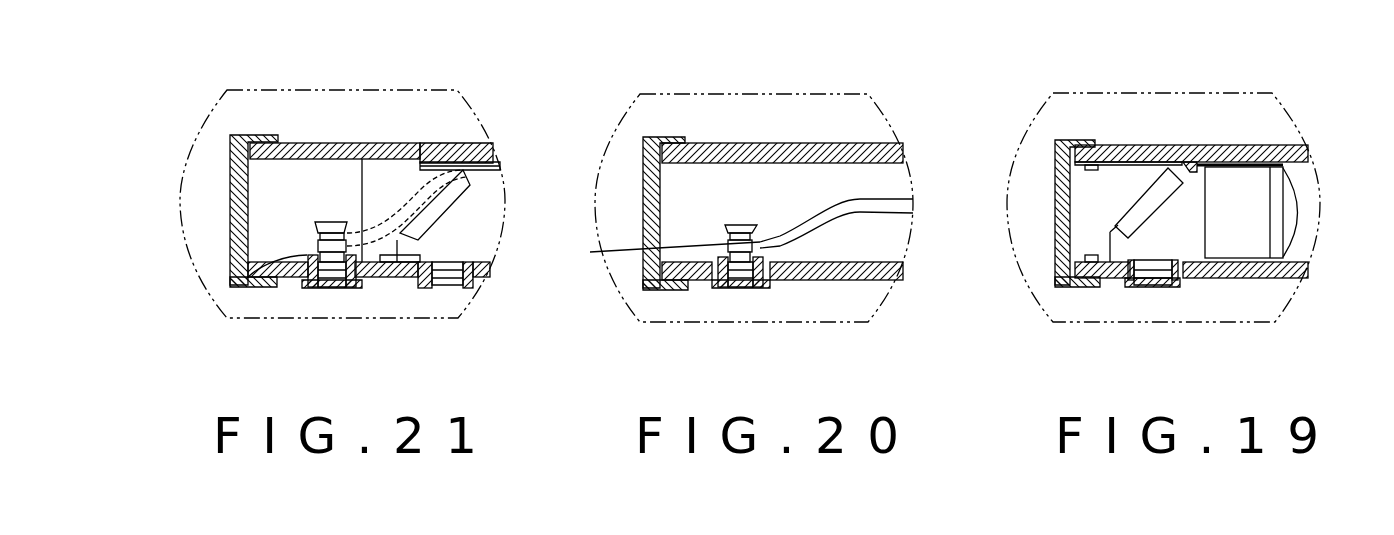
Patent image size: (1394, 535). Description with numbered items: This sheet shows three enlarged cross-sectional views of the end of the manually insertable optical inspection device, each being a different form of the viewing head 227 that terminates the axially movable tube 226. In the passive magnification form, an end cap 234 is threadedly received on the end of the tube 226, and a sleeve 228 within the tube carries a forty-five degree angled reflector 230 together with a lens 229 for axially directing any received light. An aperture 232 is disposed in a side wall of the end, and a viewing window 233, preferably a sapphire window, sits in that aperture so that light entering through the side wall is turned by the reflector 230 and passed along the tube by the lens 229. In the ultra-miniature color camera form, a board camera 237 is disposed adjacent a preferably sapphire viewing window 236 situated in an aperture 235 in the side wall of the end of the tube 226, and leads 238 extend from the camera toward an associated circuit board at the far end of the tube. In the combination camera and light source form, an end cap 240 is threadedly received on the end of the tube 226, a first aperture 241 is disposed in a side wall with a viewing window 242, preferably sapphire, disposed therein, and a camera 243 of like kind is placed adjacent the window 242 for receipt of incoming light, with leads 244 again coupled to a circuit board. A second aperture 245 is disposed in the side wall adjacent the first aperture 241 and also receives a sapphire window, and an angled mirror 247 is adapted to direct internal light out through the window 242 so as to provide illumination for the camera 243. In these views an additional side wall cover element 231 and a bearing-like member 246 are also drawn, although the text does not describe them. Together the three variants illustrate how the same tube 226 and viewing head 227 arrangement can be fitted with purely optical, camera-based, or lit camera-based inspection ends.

In FIG. 21, the axially movable tube 226 is at (371, 93).
In FIG. 20, the axially movable tube 226 is at (837, 143).
In FIG. 19, the axially movable tube 226 is at (1275, 143).
In FIG. 21, the viewing head 227 is at (378, 63).
In FIG. 20, the viewing head 227 is at (750, 75).
In FIG. 19, the viewing head 227 is at (1072, 75).
In FIG. 19, the sleeve 228 is at (1117, 147).
In FIG. 19, the lens 229 is at (1277, 202).
In FIG. 19, the reflector 230 is at (1158, 193).
In FIG. 19, the side wall cover 231 is at (1053, 160).
In FIG. 19, the aperture 232 is at (1210, 278).
In FIG. 19, the viewing window 233 is at (1155, 287).
In FIG. 20, the end cap 234 is at (656, 148).
In FIG. 20, the aperture 235 is at (770, 278).
In FIG. 20, the viewing window 236 is at (740, 290).
In FIG. 20, the board camera 237 is at (590, 252).
In FIG. 20, the leads 238 is at (860, 199).
In FIG. 21, the end cap 240 is at (256, 135).
In FIG. 21, the first aperture 241 is at (270, 285).
In FIG. 21, the viewing window 242 is at (332, 288).
In FIG. 21, the camera 243 is at (272, 263).
In FIG. 21, the leads 244 is at (403, 186).
In FIG. 21, the second aperture 245 is at (485, 270).
In FIG. 21, the bearing member 246 is at (447, 288).
In FIG. 21, the angled mirror 247 is at (472, 183).